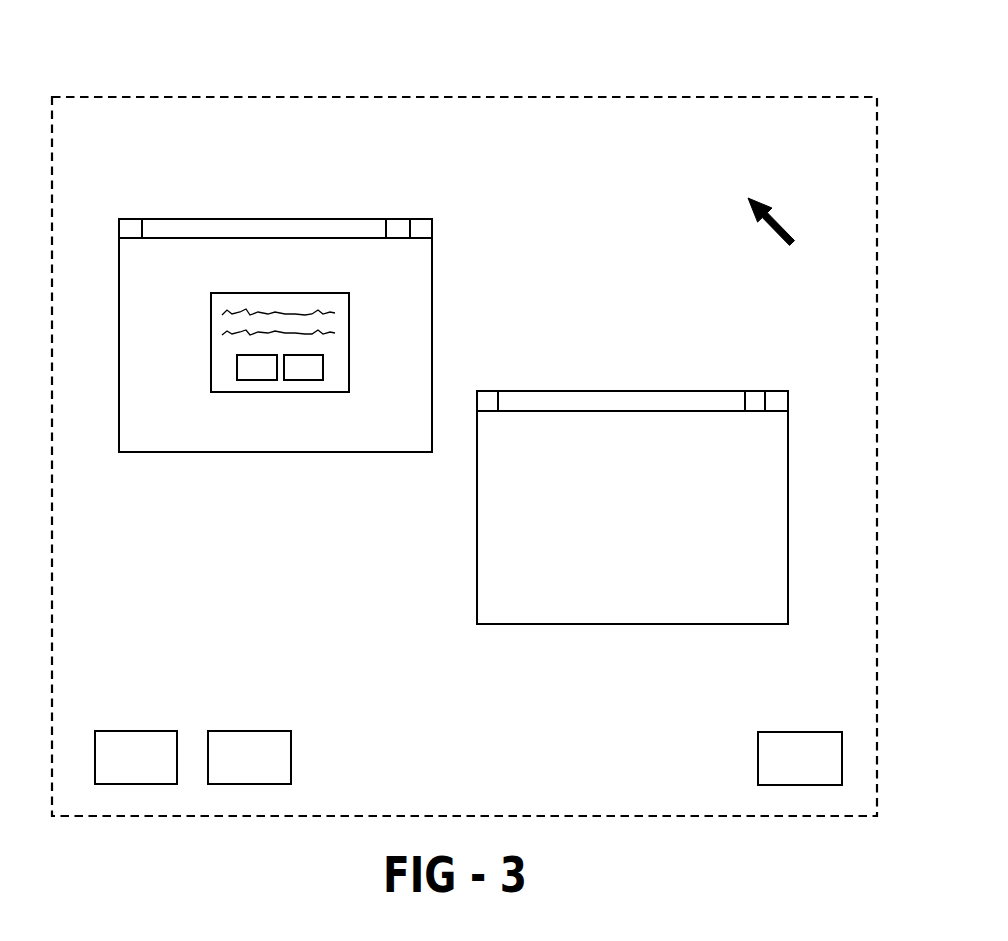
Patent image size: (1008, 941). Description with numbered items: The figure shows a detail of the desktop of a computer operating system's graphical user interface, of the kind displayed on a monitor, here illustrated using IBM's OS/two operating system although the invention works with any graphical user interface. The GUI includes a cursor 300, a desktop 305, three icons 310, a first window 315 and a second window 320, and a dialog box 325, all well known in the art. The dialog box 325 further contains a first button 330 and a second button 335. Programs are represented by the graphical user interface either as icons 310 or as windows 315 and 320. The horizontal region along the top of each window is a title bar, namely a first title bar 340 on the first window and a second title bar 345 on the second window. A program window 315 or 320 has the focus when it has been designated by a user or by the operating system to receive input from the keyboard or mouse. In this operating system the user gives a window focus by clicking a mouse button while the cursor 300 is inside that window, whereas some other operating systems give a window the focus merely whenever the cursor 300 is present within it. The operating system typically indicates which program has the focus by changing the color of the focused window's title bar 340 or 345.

The cursor 300 is at (776, 220).
The desktop 305 is at (310, 96).
The icons 310 is at (262, 731).
The first window 315 is at (788, 513).
The second window 320 is at (119, 398).
The dialog box 325 is at (211, 328).
The first button 330 is at (257, 374).
The second button 335 is at (302, 376).
The first title bar 340 is at (126, 229).
The second title bar 345 is at (777, 400).